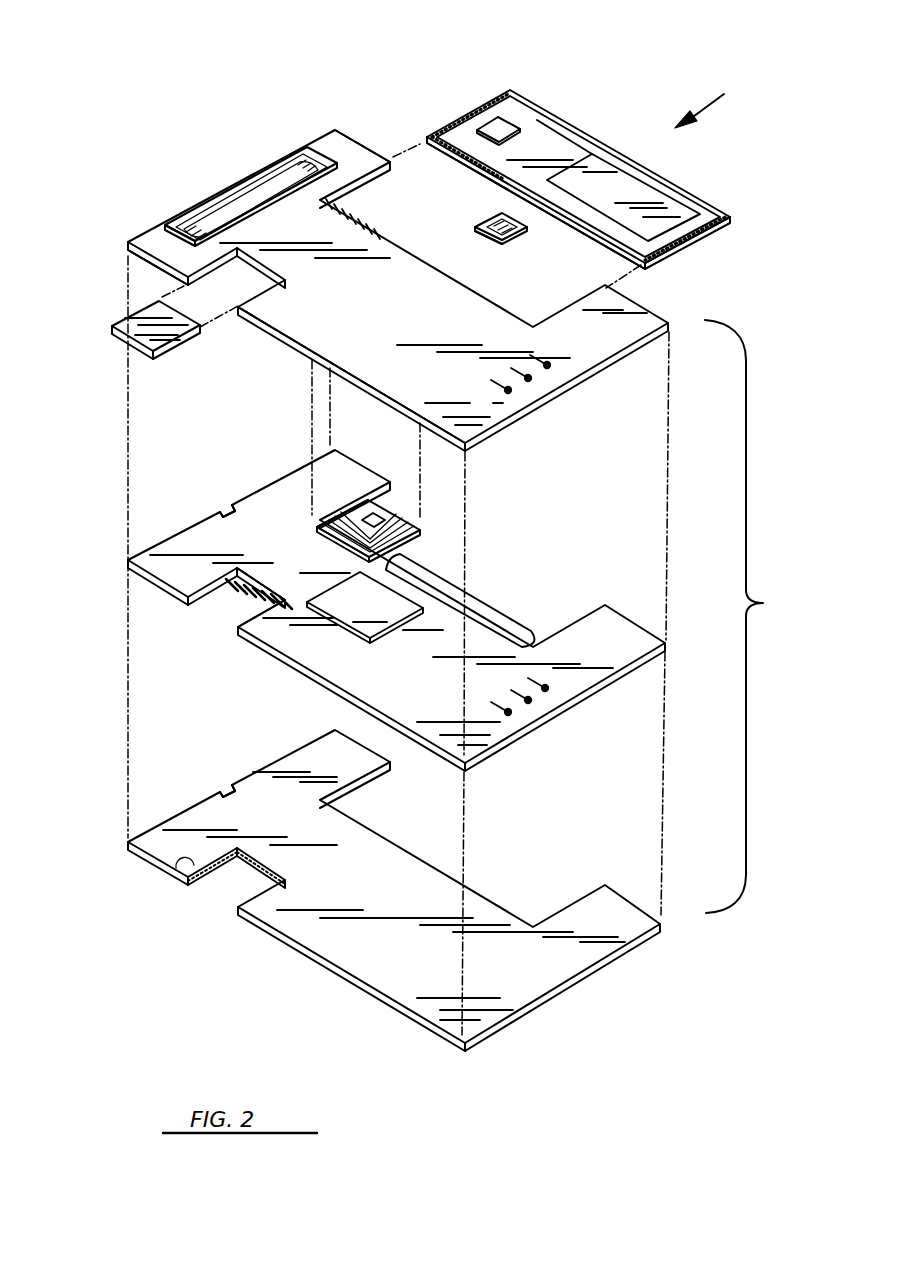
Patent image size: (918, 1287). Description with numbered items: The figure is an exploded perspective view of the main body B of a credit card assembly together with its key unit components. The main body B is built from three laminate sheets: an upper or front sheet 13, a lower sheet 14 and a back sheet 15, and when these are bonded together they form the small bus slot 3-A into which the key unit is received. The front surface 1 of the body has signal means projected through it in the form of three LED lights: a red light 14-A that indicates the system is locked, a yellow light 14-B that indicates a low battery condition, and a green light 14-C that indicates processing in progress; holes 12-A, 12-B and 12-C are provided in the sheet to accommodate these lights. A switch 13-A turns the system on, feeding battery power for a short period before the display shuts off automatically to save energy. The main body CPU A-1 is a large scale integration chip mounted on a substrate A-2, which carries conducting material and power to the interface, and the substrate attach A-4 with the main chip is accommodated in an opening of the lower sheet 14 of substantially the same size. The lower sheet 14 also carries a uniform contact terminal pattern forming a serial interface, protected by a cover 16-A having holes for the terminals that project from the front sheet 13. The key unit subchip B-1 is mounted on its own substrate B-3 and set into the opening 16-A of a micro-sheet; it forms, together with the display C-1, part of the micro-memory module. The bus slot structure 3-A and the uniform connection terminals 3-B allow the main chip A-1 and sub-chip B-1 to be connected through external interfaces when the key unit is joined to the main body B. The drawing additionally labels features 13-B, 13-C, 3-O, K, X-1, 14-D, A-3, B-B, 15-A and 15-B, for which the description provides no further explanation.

The upper sheet 13 is at (302, 323).
The switch 13-A is at (245, 178).
The slot piece edge 13-B is at (183, 215).
The front edge of board 13 arm 13-C is at (190, 265).
The arm edge 3-O is at (376, 163).
The cover 16-A is at (142, 332).
The cover plate K is at (565, 155).
The viewing direction X-1 is at (720, 105).
The key unit subchip B-1 is at (498, 214).
The substrate B-3 is at (482, 233).
The uniform connection terminals 3-B is at (605, 233).
The display C-1 is at (705, 230).
The front surface 1 is at (398, 363).
The hole 12-A is at (550, 367).
The hole 12-B is at (531, 381).
The hole 12-C is at (511, 393).
The lower sheet 14 is at (165, 565).
The notch 14-D is at (236, 506).
The red light 14-A is at (385, 618).
The yellow light 14-B is at (250, 612).
The green light 14-C is at (282, 604).
The main body CPU A-1 is at (375, 518).
The substrate A-2 is at (390, 517).
The chip base A-3 is at (413, 526).
The substrate attach A-4 is at (321, 517).
The chip mount B-B is at (302, 526).
The bus slot 3-A is at (463, 578).
The main body B is at (749, 616).
The back sheet 15 is at (427, 980).
The notch 15-A is at (229, 784).
The edge contacts 15-B is at (180, 866).